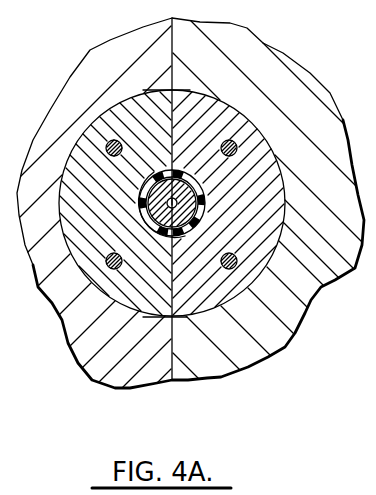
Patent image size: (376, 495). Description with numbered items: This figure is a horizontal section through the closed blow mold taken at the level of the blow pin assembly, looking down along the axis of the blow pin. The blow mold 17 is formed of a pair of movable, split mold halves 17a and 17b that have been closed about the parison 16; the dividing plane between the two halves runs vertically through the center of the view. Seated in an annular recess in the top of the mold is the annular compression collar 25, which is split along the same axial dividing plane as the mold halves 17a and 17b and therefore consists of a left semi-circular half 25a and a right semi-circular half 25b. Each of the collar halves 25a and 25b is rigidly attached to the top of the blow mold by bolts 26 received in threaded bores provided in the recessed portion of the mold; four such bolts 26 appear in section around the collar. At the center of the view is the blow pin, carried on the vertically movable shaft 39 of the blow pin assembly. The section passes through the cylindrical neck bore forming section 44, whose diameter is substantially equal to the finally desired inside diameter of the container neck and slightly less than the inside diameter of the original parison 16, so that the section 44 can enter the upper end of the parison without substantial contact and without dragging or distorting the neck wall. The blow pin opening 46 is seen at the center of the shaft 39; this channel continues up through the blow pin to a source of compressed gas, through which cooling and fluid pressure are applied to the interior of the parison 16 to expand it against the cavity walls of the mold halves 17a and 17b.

The parison 16 is at (190, 231).
The blow mold 17 is at (188, 390).
The mold half 17a is at (111, 366).
The mold half 17b is at (265, 341).
The annular compression collar 25 is at (189, 89).
The left semi-circular half 25a is at (124, 124).
The right semi-circular half 25b is at (231, 122).
The bolts 26 is at (255, 128).
The shaft 39 is at (150, 203).
The neck bore forming section 44 is at (204, 196).
The blow pin opening 46 is at (172, 170).